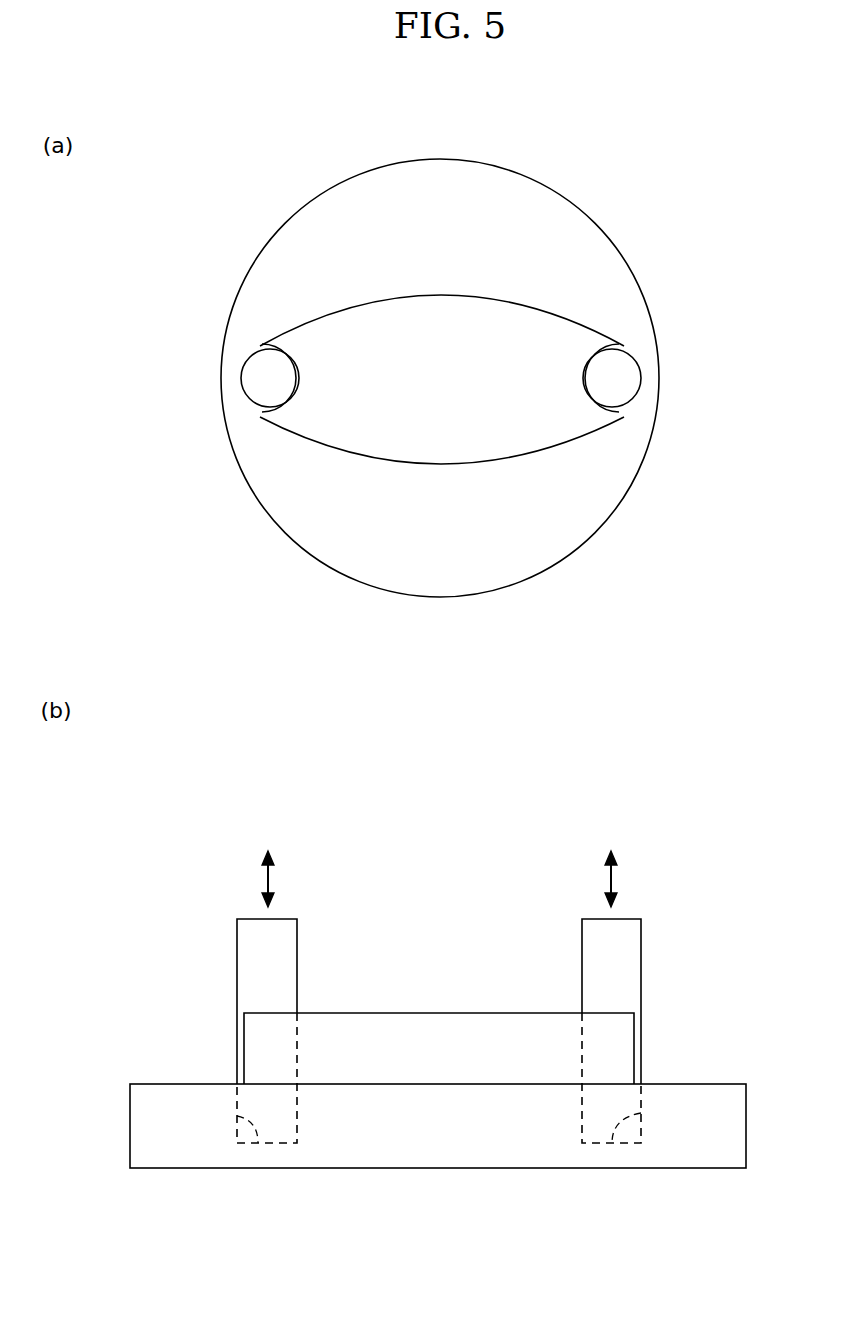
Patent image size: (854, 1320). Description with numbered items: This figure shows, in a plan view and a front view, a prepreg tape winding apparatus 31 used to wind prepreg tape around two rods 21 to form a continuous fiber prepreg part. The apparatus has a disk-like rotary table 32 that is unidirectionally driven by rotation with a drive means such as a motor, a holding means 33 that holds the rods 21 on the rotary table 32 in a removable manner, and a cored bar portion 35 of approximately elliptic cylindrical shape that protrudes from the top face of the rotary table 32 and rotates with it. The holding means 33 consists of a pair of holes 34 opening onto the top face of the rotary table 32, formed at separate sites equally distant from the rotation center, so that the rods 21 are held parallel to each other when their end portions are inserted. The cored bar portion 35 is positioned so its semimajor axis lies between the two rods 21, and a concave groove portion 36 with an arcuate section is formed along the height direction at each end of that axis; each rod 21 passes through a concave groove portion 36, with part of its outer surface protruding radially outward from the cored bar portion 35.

The rod 21 is at (268, 373).
The winding apparatus 31 is at (599, 166).
The rotary table 32 is at (468, 170).
The holding means 33 is at (628, 352).
The hole 34 is at (258, 1143).
The cored bar portion 35 is at (541, 320).
The concave groove portion 36 is at (278, 401).